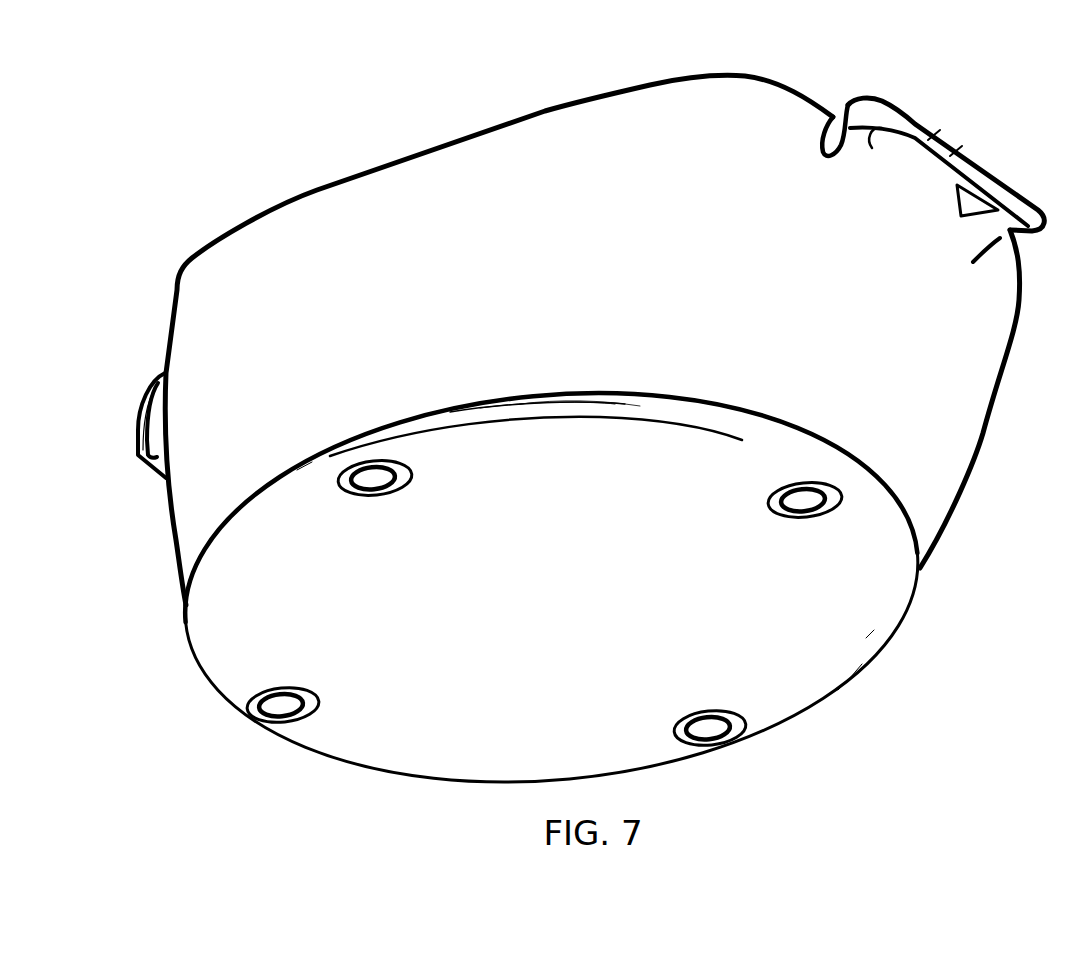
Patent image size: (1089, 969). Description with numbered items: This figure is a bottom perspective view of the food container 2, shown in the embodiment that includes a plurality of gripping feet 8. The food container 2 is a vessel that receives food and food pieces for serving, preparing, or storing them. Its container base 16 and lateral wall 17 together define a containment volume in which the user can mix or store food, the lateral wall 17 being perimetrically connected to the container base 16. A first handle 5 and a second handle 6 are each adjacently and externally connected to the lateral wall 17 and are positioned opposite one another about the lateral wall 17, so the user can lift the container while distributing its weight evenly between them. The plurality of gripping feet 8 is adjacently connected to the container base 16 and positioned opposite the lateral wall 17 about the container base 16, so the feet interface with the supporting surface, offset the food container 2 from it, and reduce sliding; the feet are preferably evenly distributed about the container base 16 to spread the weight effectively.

The food container 2 is at (232, 95).
The first handle 5 is at (147, 462).
The second handle 6 is at (983, 180).
The plurality of gripping feet 8 is at (378, 481).
The container base 16 is at (827, 650).
The lateral wall 17 is at (950, 452).